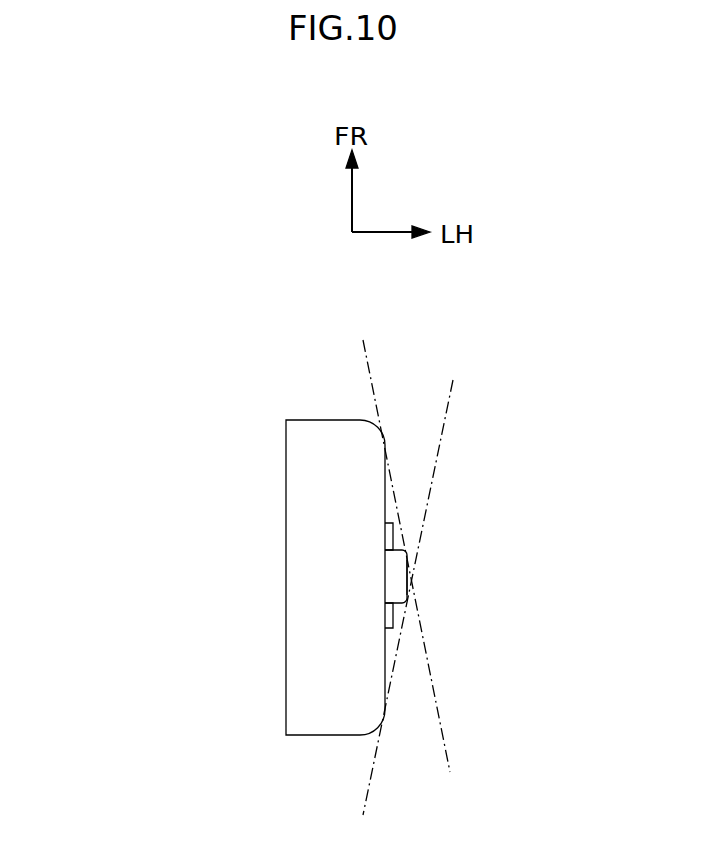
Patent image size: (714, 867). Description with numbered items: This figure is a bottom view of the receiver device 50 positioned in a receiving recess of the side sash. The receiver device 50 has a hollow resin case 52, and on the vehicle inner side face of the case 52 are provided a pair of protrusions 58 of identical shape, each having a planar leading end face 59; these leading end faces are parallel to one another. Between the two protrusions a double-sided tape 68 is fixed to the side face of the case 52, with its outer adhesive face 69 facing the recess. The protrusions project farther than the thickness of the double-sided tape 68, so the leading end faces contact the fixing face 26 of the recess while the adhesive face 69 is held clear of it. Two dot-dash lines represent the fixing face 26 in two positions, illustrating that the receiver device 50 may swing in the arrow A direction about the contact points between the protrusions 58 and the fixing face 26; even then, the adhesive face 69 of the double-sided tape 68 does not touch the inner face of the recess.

The fixing face 26 is at (443, 432).
The receiver device 50 is at (366, 536).
The case 52 is at (312, 437).
The protrusion 58 is at (395, 568).
The leading end face 59 is at (408, 578).
The double-sided tape 68 is at (397, 618).
The adhesive face 69 is at (403, 535).